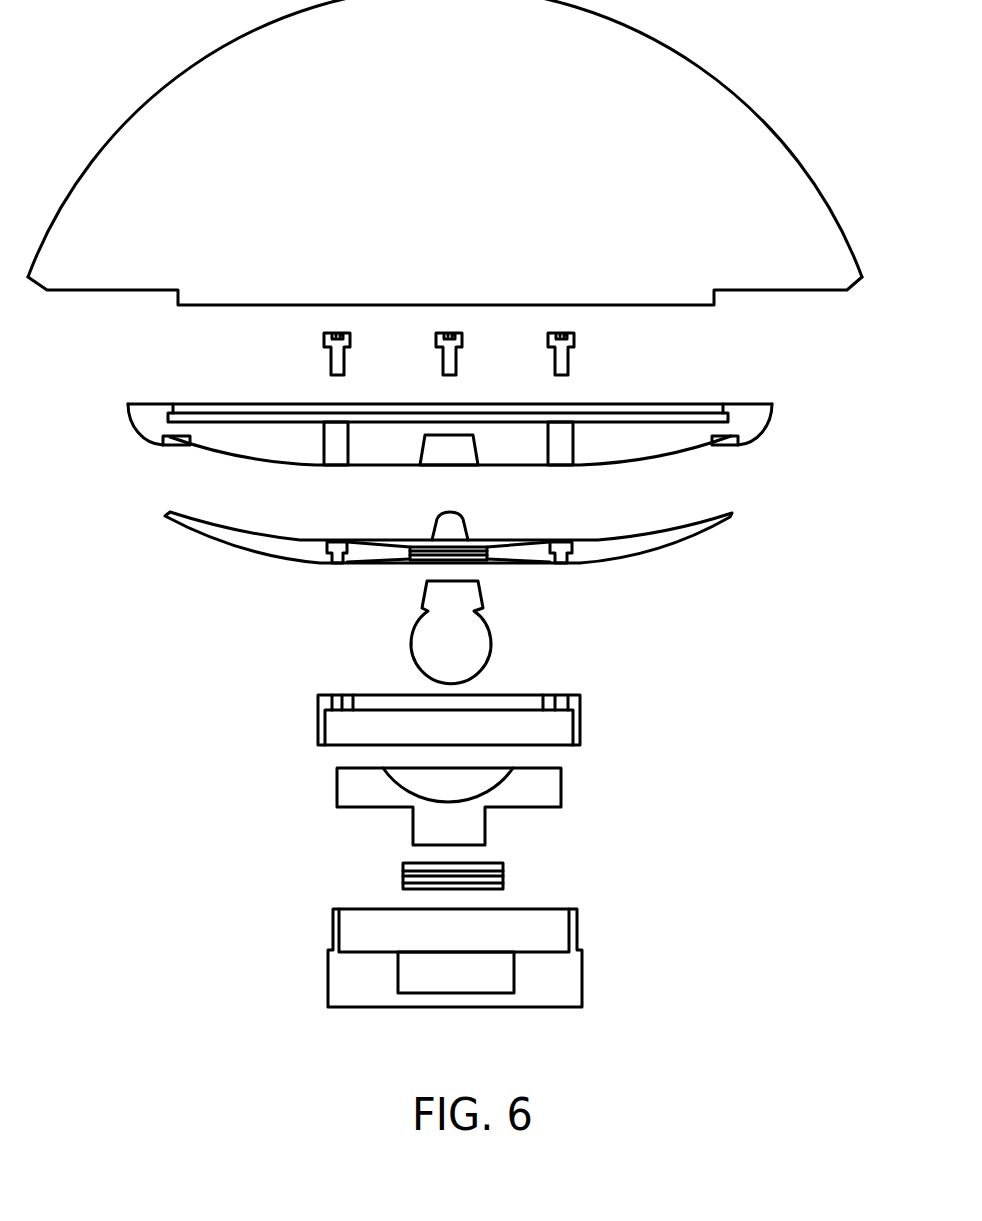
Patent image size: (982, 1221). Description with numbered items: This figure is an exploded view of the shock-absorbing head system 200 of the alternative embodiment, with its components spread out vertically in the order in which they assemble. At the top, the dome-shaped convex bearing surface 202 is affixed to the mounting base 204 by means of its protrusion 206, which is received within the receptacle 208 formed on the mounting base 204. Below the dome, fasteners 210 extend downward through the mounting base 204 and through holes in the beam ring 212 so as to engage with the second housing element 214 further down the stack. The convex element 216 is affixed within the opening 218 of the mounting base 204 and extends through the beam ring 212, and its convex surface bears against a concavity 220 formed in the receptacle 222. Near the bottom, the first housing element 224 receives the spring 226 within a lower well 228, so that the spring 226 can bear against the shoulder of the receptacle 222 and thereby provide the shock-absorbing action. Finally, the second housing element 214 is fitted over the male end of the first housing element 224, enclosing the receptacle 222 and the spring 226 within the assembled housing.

The shock-absorbing head system 200 is at (852, 114).
The convex bearing surface 202 is at (825, 193).
The mounting base 204 is at (760, 427).
The protrusion 206 is at (713, 307).
The receptacle 208 is at (203, 404).
The fasteners 210 is at (326, 341).
The beam ring 212 is at (643, 548).
The second housing element 214 is at (582, 728).
The convex element 216 is at (482, 634).
The opening 218 is at (467, 457).
The concavity 220 is at (500, 787).
The receptacle 222 is at (375, 795).
The first housing element 224 is at (583, 975).
The spring 226 is at (505, 878).
The lower well 228 is at (438, 995).